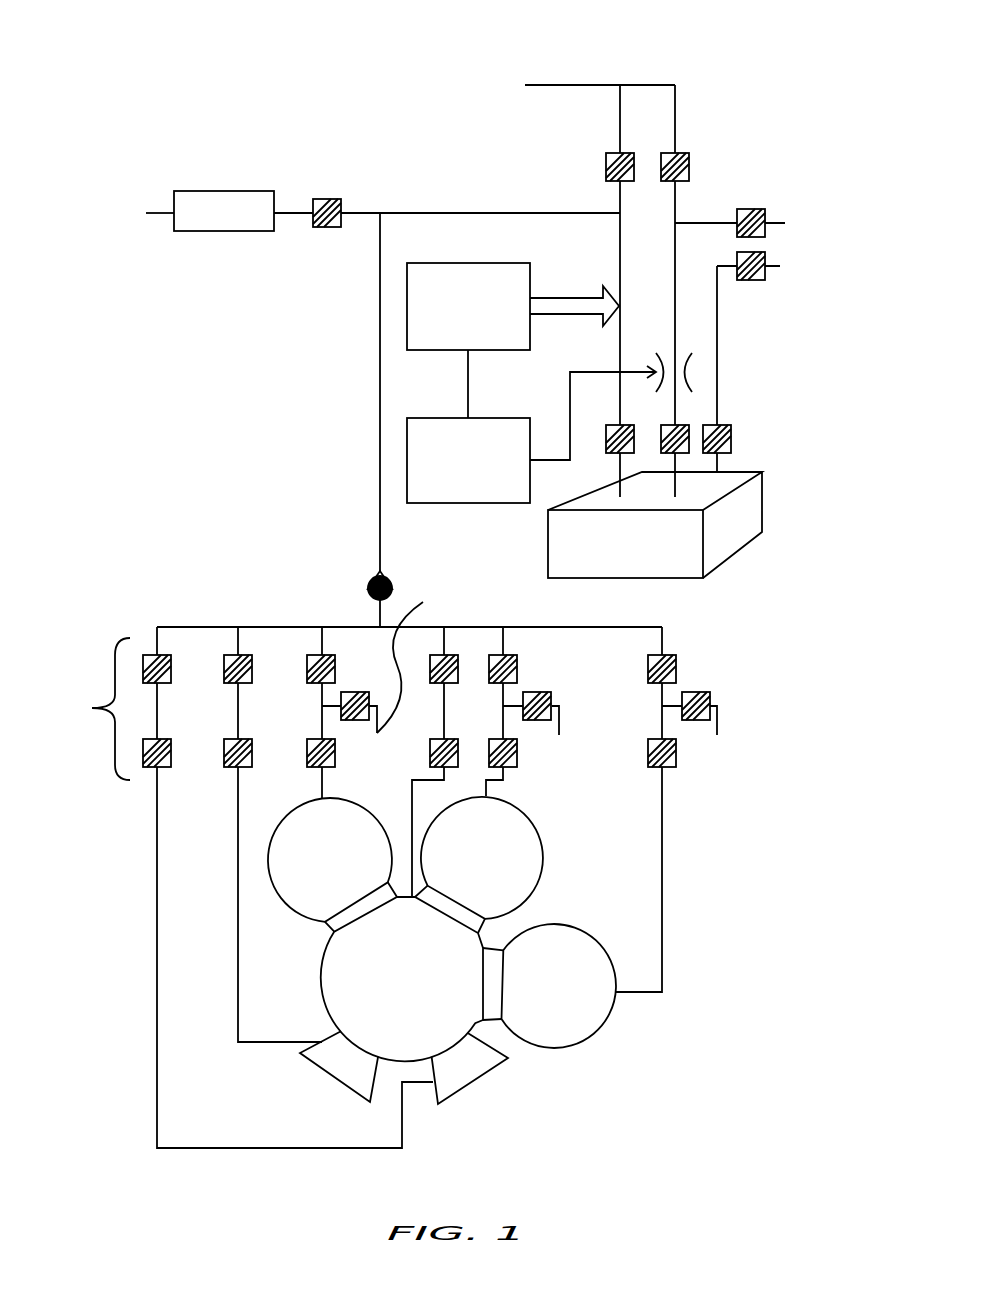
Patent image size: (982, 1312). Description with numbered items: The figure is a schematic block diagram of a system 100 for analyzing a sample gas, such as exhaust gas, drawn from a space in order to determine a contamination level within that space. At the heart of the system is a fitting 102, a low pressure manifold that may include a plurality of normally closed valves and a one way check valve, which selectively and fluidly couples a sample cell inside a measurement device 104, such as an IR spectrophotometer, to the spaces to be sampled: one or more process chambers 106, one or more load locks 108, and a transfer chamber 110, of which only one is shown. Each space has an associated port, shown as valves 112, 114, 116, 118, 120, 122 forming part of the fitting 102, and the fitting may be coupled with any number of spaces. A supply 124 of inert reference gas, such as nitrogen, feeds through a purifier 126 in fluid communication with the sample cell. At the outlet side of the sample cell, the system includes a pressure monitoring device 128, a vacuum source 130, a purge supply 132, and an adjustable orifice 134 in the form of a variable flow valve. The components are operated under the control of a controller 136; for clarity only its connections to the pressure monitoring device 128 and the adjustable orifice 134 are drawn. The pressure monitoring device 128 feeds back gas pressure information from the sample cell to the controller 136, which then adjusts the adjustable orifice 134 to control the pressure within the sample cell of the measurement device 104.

The system 100 is at (272, 55).
The fitting 102 is at (92, 708).
The measurement device 104 is at (745, 472).
The process chamber 106 is at (315, 800).
The load lock 108 is at (343, 1083).
The transfer chamber 110 is at (325, 975).
The port 112 is at (158, 742).
The port 114 is at (240, 742).
The port 116 is at (336, 768).
The port 118 is at (430, 760).
The port 120 is at (517, 768).
The port 122 is at (677, 768).
The supply 124 is at (82, 177).
The purifier 126 is at (207, 232).
The pressure monitoring device 128 is at (497, 265).
The vacuum source 130 is at (832, 215).
The purge supply 132 is at (808, 288).
The adjustable orifice 134 is at (688, 375).
The controller 136 is at (507, 503).